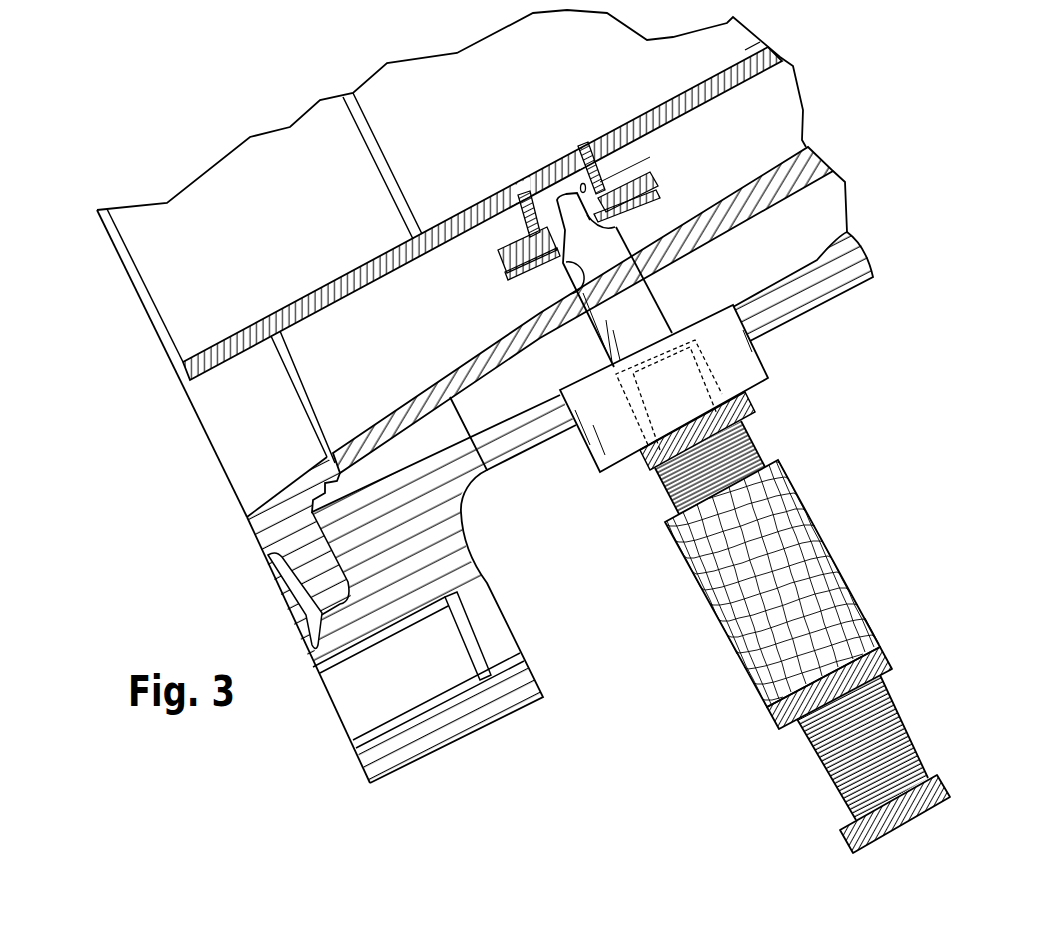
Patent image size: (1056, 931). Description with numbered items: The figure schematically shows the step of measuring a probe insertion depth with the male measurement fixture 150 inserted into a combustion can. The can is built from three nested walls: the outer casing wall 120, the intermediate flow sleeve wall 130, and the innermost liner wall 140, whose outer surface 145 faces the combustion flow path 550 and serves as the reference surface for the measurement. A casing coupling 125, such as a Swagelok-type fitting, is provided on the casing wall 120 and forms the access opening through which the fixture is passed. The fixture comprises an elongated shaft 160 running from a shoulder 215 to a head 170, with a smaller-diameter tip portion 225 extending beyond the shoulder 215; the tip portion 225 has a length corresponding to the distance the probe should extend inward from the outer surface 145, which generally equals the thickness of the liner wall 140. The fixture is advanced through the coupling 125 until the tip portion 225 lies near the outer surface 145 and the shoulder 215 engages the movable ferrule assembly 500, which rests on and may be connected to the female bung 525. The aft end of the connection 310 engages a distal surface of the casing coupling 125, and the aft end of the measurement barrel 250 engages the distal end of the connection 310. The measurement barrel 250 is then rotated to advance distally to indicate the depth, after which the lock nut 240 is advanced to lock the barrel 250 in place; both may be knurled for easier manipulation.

The combustion flow path 550 is at (450, 120).
The outer surface 145 is at (665, 124).
The liner wall 140 is at (748, 47).
The flow sleeve wall 130 is at (803, 143).
The casing wall 120 is at (847, 232).
The casing coupling 125 is at (769, 375).
The movable ferrule assembly 500 is at (647, 213).
The female bung 525 is at (627, 158).
The tip portion 225 is at (540, 218).
The shoulder 215 is at (572, 291).
The connection 310 is at (662, 468).
The male measurement fixture 150 is at (842, 656).
The measurement barrel 250 is at (862, 585).
The lock nut 240 is at (883, 663).
The shaft 160 is at (895, 720).
The head 170 is at (943, 783).